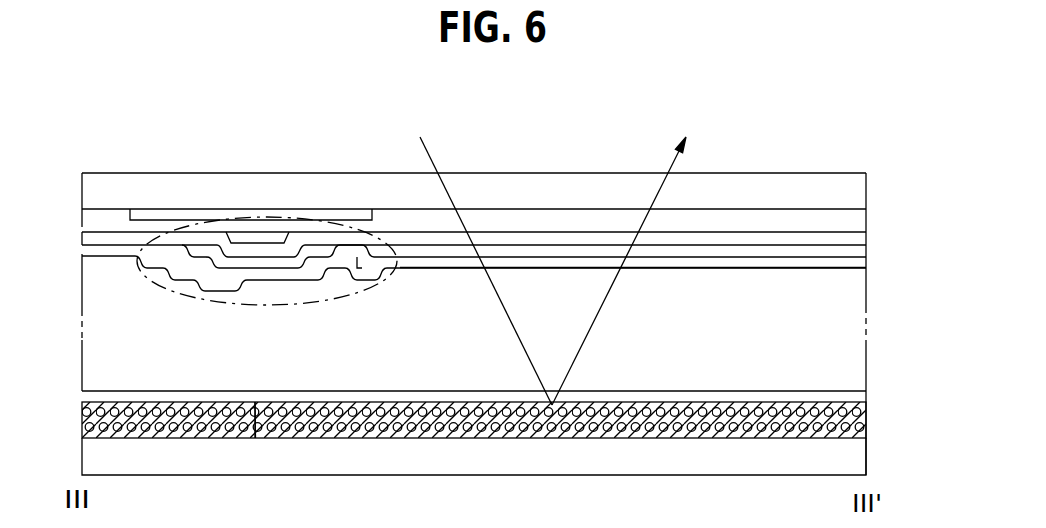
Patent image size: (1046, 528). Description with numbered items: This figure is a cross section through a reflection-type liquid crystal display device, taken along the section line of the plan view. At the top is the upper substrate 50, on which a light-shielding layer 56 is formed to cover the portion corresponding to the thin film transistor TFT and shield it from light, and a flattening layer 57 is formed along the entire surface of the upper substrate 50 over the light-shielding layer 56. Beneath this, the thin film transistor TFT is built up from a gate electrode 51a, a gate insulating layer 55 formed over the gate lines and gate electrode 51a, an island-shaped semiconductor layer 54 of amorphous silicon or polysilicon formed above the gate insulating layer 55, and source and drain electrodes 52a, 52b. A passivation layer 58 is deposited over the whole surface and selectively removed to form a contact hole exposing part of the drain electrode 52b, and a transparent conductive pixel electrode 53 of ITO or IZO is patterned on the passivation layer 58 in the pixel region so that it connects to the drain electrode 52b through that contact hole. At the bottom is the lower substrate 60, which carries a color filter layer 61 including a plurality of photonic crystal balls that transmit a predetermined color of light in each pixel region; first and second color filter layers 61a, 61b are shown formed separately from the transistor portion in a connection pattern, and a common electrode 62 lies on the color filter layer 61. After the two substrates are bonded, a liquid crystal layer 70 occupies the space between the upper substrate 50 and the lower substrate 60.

The upper substrate 50 is at (866, 188).
The light-shielding layer 56 is at (142, 215).
The flattening layer 57 is at (866, 218).
The gate electrode 51a is at (262, 237).
The gate insulating layer 55 is at (866, 243).
The semiconductor layer 54 is at (260, 263).
The source electrode 52a is at (217, 273).
The drain electrode 52b is at (305, 275).
The passivation layer 58 is at (858, 252).
The pixel electrode 53 is at (853, 266).
The thin film transistor TFT is at (137, 270).
The liquid crystal layer 70 is at (866, 332).
The common electrode 62 is at (858, 399).
The color filter layer 61 is at (866, 421).
The first color filter layer 61a is at (164, 410).
The second color filter layer 61b is at (440, 408).
The lower substrate 60 is at (860, 457).